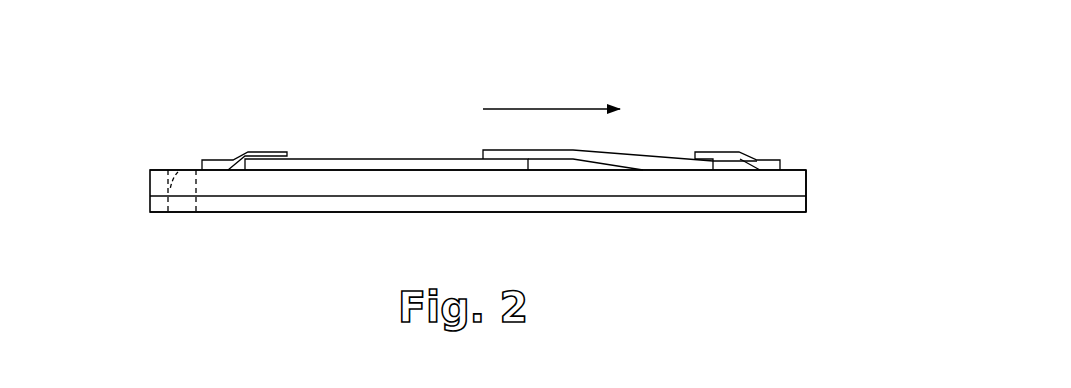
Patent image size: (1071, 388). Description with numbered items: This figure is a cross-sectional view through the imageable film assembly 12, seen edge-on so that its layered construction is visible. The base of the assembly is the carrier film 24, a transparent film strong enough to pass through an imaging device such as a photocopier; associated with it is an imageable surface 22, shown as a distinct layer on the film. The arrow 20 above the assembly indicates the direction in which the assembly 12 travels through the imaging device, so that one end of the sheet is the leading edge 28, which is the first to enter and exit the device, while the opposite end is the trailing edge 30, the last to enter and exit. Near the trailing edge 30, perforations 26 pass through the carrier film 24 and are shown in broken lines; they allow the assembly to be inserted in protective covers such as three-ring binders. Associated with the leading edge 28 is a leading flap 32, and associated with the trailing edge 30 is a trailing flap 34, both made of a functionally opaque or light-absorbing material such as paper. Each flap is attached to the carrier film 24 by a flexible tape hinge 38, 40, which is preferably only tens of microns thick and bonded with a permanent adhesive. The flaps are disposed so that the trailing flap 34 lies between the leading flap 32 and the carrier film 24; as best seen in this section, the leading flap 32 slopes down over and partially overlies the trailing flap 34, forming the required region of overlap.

The imageable film assembly 12 is at (310, 117).
The arrow 20 is at (557, 108).
The imageable surface 22 is at (413, 203).
The carrier film 24 is at (610, 183).
The perforations 26 is at (178, 168).
The leading edge 28 is at (808, 187).
The trailing edge 30 is at (146, 197).
The leading flap 32 is at (600, 160).
The trailing flap 34 is at (357, 159).
The flexible tape hinge 38 is at (240, 157).
The flexible tape hinge 40 is at (760, 160).